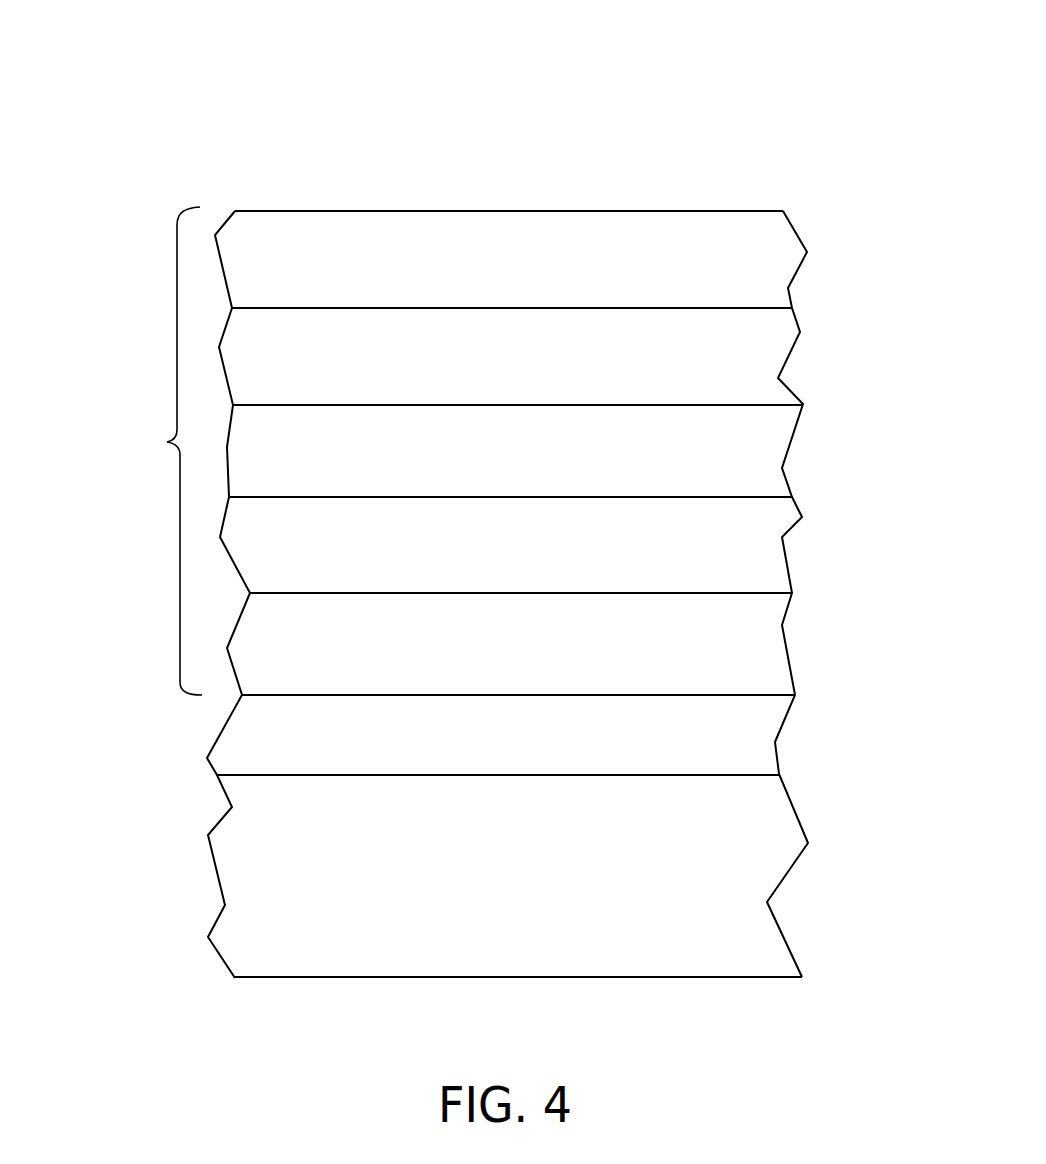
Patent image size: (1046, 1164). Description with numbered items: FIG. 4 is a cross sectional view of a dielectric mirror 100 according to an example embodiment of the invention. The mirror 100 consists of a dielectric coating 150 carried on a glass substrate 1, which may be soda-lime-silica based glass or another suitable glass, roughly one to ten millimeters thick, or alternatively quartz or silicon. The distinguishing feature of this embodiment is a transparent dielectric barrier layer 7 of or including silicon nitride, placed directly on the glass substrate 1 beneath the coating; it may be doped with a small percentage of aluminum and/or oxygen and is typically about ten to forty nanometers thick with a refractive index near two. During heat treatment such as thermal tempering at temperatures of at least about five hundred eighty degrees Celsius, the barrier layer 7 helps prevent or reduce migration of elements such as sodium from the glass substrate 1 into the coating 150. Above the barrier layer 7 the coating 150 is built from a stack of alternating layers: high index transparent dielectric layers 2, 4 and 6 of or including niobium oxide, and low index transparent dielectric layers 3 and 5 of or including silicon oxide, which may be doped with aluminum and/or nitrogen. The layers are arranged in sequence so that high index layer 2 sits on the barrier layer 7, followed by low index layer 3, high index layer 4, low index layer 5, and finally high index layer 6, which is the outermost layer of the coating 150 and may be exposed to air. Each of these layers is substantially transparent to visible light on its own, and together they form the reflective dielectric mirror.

The dielectric mirror 100 is at (696, 128).
The dielectric coating 150 is at (160, 443).
The glass substrate 1 is at (760, 822).
The transparent dielectric barrier layer 7 is at (758, 733).
The high index transparent dielectric layer 2 is at (758, 653).
The low index transparent dielectric layer 3 is at (760, 553).
The high index transparent dielectric layer 4 is at (760, 453).
The low index transparent dielectric layer 5 is at (762, 361).
The high index transparent dielectric layer 6 is at (771, 263).